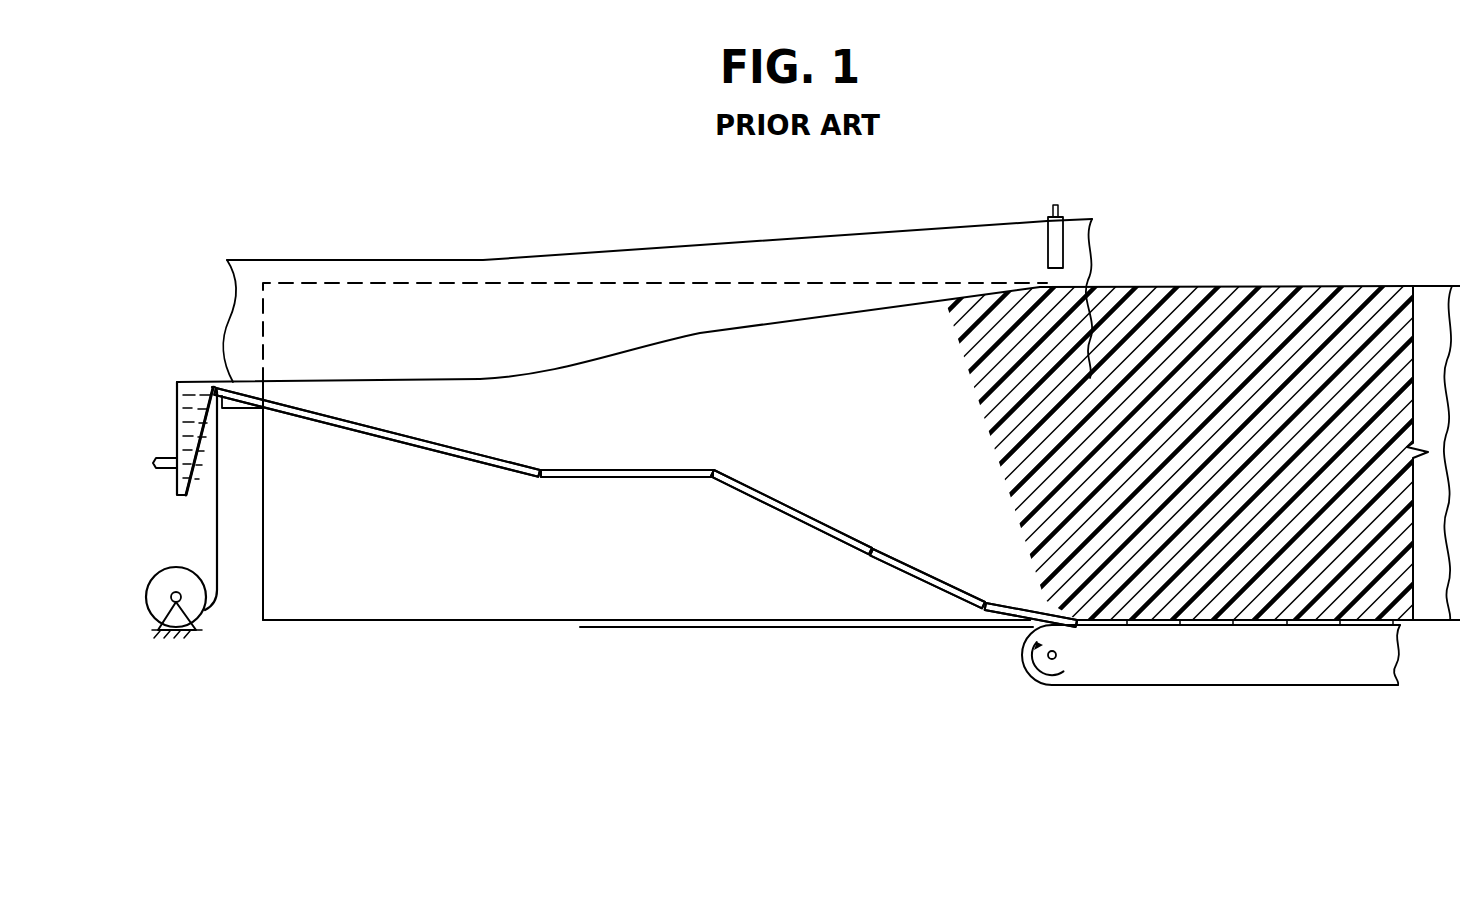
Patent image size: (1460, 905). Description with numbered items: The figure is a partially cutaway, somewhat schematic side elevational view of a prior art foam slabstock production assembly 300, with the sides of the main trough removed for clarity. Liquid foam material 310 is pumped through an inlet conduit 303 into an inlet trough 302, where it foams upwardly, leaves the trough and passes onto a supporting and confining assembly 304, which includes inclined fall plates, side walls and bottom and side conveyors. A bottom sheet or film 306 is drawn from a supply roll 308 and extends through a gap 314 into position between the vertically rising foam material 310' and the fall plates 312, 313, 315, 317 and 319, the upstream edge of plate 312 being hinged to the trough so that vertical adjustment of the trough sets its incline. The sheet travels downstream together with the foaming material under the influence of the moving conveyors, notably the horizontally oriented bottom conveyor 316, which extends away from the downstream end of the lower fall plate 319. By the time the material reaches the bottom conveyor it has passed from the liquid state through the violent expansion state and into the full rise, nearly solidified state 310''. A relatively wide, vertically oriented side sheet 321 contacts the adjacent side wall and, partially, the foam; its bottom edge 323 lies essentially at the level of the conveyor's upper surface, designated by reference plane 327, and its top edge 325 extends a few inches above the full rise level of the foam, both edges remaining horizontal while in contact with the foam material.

The foam slabstock production assembly 300 is at (585, 228).
The inlet trough 302 is at (177, 400).
The inlet conduit 303 is at (168, 469).
The supporting and confining assembly 304 is at (562, 490).
The bottom sheet or film 306 is at (218, 508).
The supply roll 308 is at (197, 603).
The foam material 310 is at (155, 436).
The vertically rising foam material 310' is at (760, 353).
The foam material in full rise state 310'' is at (1024, 407).
The fall plate 312 is at (443, 451).
The fall plate 313 is at (630, 479).
The gap 314 is at (228, 384).
The fall plate 315 is at (782, 512).
The bottom conveyor 316 is at (1098, 696).
The fall plate 317 is at (882, 562).
The lower fall plate 319 is at (1007, 612).
The side sheet 321 is at (375, 605).
The bottom edge 323 is at (492, 622).
The top edge 325 is at (388, 282).
The reference plane 327 is at (633, 630).